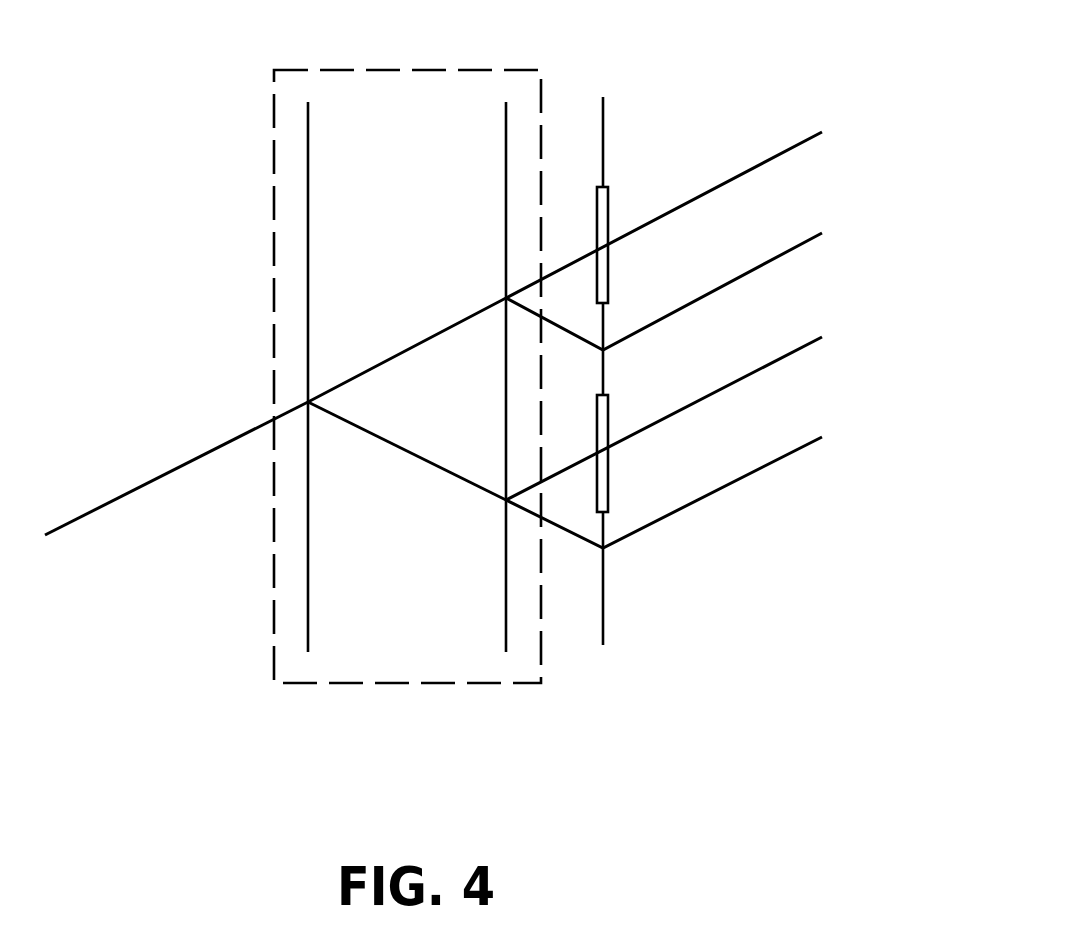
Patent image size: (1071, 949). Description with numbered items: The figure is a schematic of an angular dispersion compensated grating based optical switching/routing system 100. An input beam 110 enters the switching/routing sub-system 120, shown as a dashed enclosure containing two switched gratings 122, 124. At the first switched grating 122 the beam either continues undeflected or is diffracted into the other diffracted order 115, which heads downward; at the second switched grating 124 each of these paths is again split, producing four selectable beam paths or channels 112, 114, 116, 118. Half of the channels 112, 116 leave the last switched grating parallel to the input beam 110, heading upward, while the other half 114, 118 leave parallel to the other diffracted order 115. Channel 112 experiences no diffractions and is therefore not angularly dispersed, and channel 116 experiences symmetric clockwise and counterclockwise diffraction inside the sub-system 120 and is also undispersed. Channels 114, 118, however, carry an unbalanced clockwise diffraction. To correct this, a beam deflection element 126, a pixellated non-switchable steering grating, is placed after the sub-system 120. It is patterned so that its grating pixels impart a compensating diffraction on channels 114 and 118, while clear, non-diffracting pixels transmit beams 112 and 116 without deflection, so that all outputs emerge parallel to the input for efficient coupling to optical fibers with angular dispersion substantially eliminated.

The angular dispersion compensated optical switching/routing system 100 is at (136, 71).
The input beam 110 is at (107, 505).
The channel 112 is at (713, 188).
The channel 114 is at (715, 292).
The other diffracted order 115 is at (408, 455).
The channel 116 is at (715, 392).
The channel 118 is at (715, 493).
The switching/routing sub-system 120 is at (392, 683).
The switched grating 122 is at (308, 543).
The switched grating 124 is at (506, 581).
The beam deflection element 126 is at (603, 595).